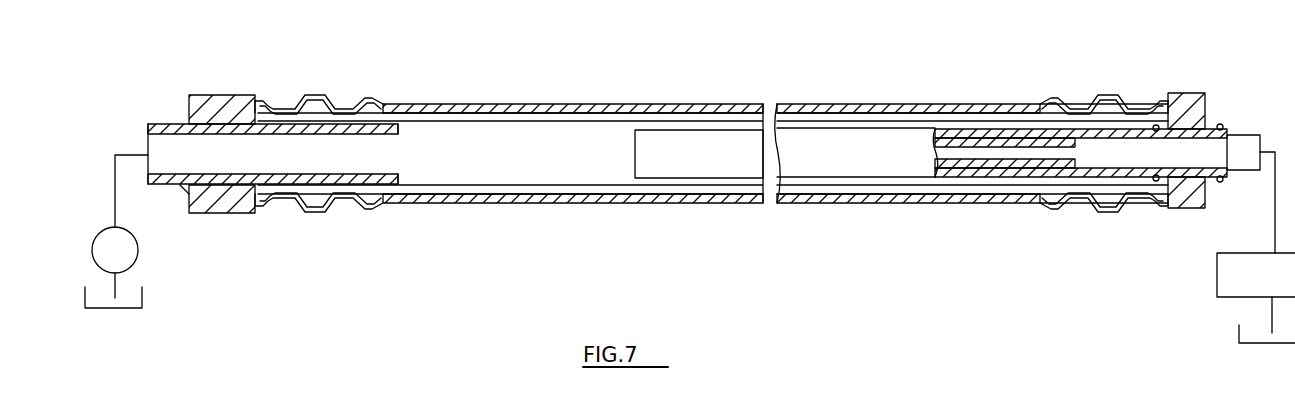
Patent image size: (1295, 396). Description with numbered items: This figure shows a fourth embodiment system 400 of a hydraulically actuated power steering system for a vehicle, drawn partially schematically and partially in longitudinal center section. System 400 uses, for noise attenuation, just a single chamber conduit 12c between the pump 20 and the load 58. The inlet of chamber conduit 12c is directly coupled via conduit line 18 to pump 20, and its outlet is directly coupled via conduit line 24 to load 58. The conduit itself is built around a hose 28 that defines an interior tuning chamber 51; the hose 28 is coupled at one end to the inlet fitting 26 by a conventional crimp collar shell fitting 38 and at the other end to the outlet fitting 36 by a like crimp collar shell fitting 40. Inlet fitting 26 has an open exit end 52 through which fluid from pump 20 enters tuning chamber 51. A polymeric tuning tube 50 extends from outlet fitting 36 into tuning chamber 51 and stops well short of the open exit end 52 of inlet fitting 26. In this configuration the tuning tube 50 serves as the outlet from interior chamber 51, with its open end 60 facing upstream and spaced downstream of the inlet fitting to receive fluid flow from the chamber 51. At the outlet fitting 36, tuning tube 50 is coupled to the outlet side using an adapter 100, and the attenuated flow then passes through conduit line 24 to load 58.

The fourth embodiment system 400 is at (161, 79).
The chamber conduit 12c is at (141, 120).
The inlet fitting 26 is at (177, 121).
The open exit end 52 is at (402, 145).
The conduit line 18 is at (112, 186).
The pump 20 is at (139, 251).
The crimp collar shell fitting 38 is at (320, 214).
The tuning chamber 51 is at (529, 176).
The hose 28 is at (589, 201).
The open end 60 is at (634, 150).
The polymeric tuning tube 50 is at (800, 183).
The adapter 100 is at (990, 181).
The crimp collar shell fitting 40 is at (1108, 212).
The outlet fitting 36 is at (1239, 122).
The conduit line 24 is at (1271, 218).
The load 58 is at (1214, 273).